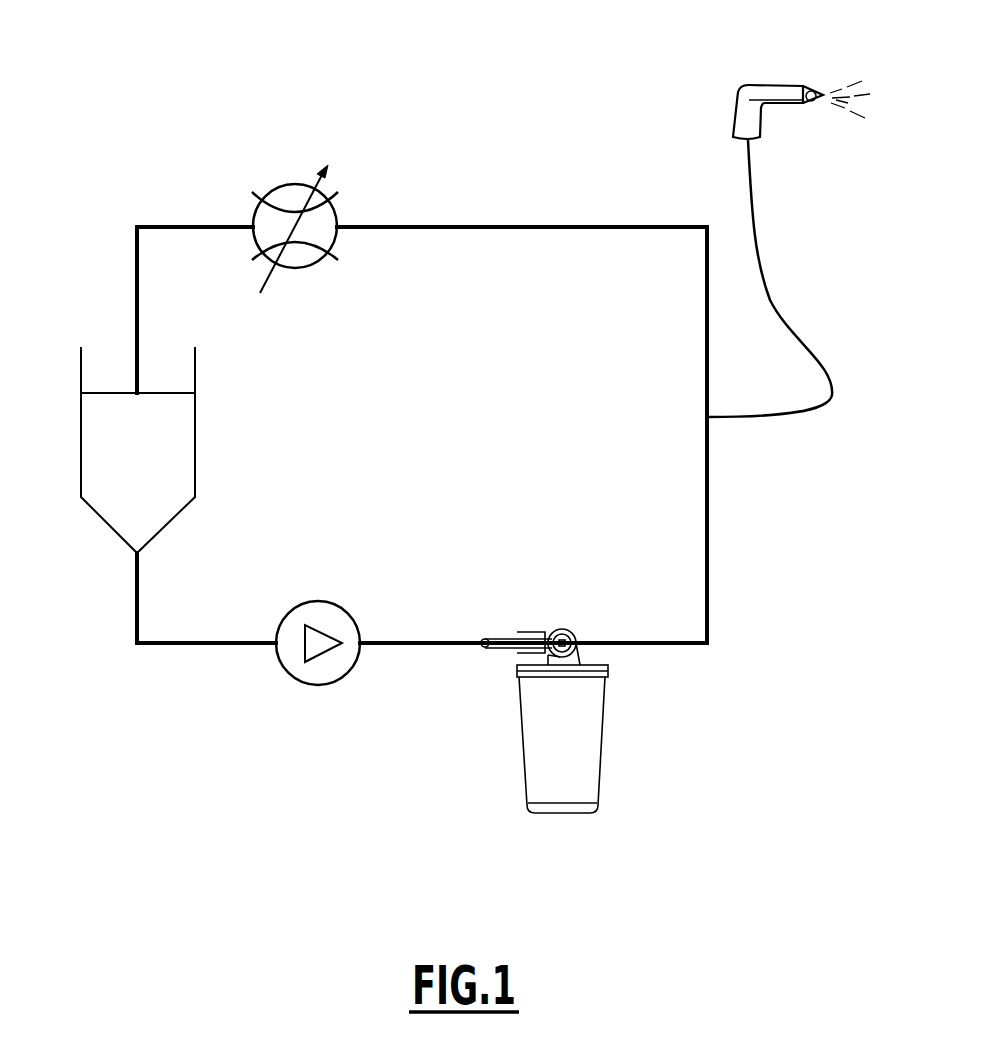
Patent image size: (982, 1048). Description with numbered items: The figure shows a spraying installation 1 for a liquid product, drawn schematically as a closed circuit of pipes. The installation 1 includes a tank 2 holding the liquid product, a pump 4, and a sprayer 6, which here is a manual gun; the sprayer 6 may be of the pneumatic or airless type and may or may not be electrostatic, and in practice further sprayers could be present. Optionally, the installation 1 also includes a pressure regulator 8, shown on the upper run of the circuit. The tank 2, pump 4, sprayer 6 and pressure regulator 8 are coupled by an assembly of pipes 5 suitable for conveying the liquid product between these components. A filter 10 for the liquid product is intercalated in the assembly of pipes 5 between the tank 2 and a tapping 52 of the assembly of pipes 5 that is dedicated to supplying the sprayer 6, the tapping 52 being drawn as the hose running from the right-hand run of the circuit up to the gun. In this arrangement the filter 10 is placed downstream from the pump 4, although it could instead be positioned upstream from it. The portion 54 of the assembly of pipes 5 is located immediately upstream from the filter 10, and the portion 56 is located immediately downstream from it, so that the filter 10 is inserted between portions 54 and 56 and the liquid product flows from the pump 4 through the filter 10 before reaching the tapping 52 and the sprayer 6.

The installation 1 is at (258, 82).
The tank 2 is at (81, 448).
The pump 4 is at (295, 682).
The assembly of pipes 5 is at (497, 226).
The sprayer 6 is at (782, 86).
The pressure regulator 8 is at (258, 197).
The filter 10 is at (607, 688).
The tapping 52 is at (810, 355).
The portion of assembly of pipes upstream from filter 54 is at (397, 645).
The portion of assembly of pipes downstream from filter 56 is at (707, 497).